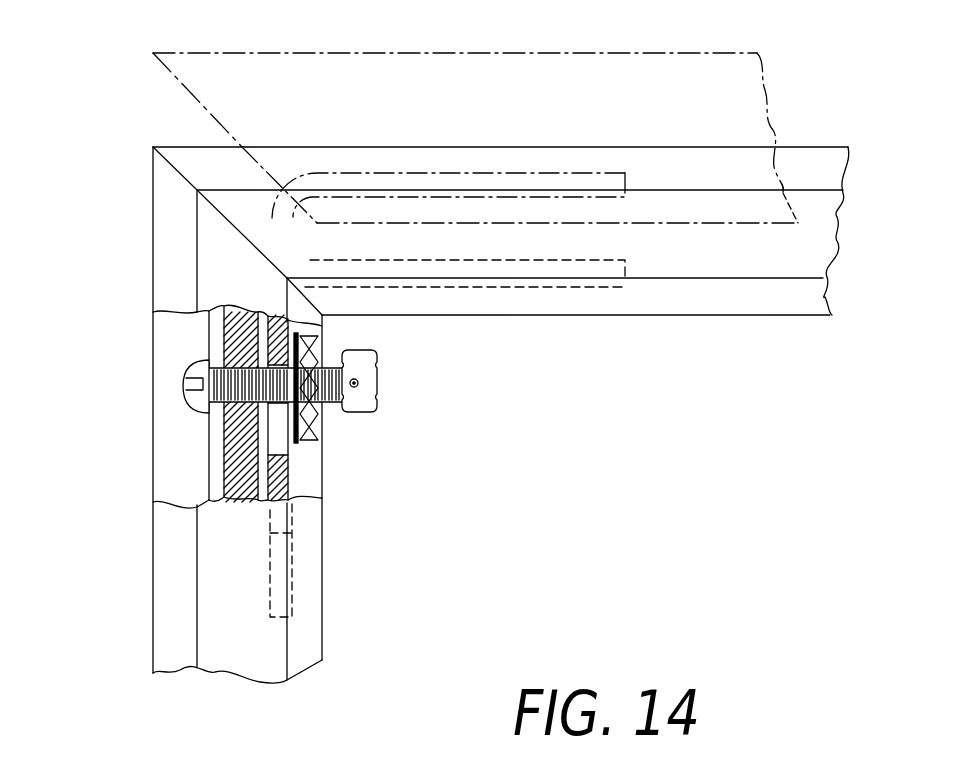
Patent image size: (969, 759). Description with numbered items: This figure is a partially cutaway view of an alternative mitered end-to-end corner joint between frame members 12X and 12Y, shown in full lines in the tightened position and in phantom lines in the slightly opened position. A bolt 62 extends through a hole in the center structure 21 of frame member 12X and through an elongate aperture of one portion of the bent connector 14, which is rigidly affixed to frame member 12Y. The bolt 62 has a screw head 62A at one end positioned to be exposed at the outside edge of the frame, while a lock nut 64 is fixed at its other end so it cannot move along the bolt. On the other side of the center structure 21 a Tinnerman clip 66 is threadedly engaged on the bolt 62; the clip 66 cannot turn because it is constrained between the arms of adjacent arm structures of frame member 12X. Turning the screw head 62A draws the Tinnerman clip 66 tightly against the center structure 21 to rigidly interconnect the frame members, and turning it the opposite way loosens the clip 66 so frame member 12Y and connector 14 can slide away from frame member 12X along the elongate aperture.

The frame member 12X is at (325, 585).
The frame member 12Y is at (612, 317).
The connector 14 is at (293, 478).
The center structure 21 is at (207, 475).
The bolt 62 is at (192, 396).
The screw head 62A is at (193, 362).
The nut 64 is at (377, 363).
The Tinnerman clip 66 is at (295, 440).